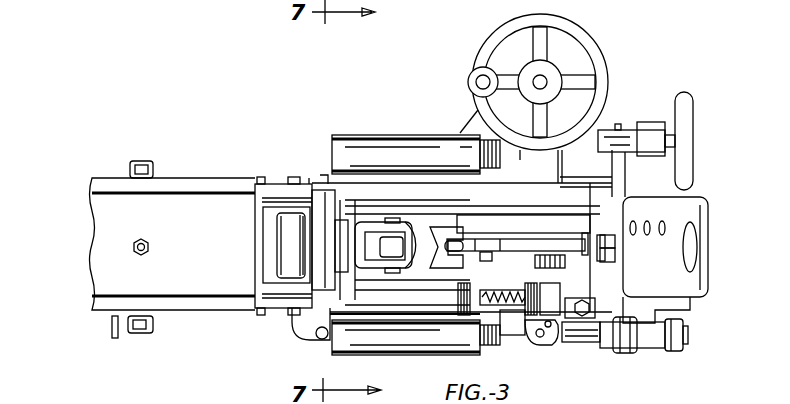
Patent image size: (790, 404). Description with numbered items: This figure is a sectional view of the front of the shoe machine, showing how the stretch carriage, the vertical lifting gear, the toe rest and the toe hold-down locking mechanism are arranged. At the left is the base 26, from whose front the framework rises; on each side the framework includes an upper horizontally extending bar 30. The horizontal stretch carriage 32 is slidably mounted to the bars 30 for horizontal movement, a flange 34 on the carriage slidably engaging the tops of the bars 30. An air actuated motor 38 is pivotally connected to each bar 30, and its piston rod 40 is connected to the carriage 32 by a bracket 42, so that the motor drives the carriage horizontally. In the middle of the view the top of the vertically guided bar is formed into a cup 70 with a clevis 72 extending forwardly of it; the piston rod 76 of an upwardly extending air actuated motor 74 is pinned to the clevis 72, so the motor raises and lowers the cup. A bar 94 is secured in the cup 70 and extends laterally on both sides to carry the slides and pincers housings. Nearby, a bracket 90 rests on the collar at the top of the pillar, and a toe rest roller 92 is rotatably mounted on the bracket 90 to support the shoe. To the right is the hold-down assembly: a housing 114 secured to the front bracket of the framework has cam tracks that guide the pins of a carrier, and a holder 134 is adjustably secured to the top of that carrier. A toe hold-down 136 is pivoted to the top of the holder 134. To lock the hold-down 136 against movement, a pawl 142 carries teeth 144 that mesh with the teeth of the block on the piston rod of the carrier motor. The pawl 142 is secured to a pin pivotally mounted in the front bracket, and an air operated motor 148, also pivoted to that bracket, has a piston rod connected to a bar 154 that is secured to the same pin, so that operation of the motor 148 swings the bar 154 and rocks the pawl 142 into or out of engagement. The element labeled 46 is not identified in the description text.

The base 26 is at (189, 187).
The upper horizontally extending bar 30 is at (276, 184).
The horizontal stretch carriage 32 is at (421, 213).
The flange 34 is at (410, 312).
The air actuated motor 38 is at (361, 150).
The piston rod 40 is at (499, 345).
The bracket 42 is at (547, 345).
The body block 46 is at (615, 301).
The cup 70 is at (302, 312).
The clevis 72 is at (365, 218).
The air actuated motor 74 is at (408, 252).
The piston rod 76 is at (372, 281).
The bracket 90 is at (268, 240).
The toe rest roller 92 is at (295, 254).
The bar 94 is at (322, 195).
The housing 114 is at (526, 228).
The holder 134 is at (560, 262).
The toe hold-down 136 is at (437, 230).
The pawl 142 is at (616, 259).
The teeth 144 is at (616, 245).
The air operated motor 148 is at (640, 350).
The bar 154 is at (597, 342).